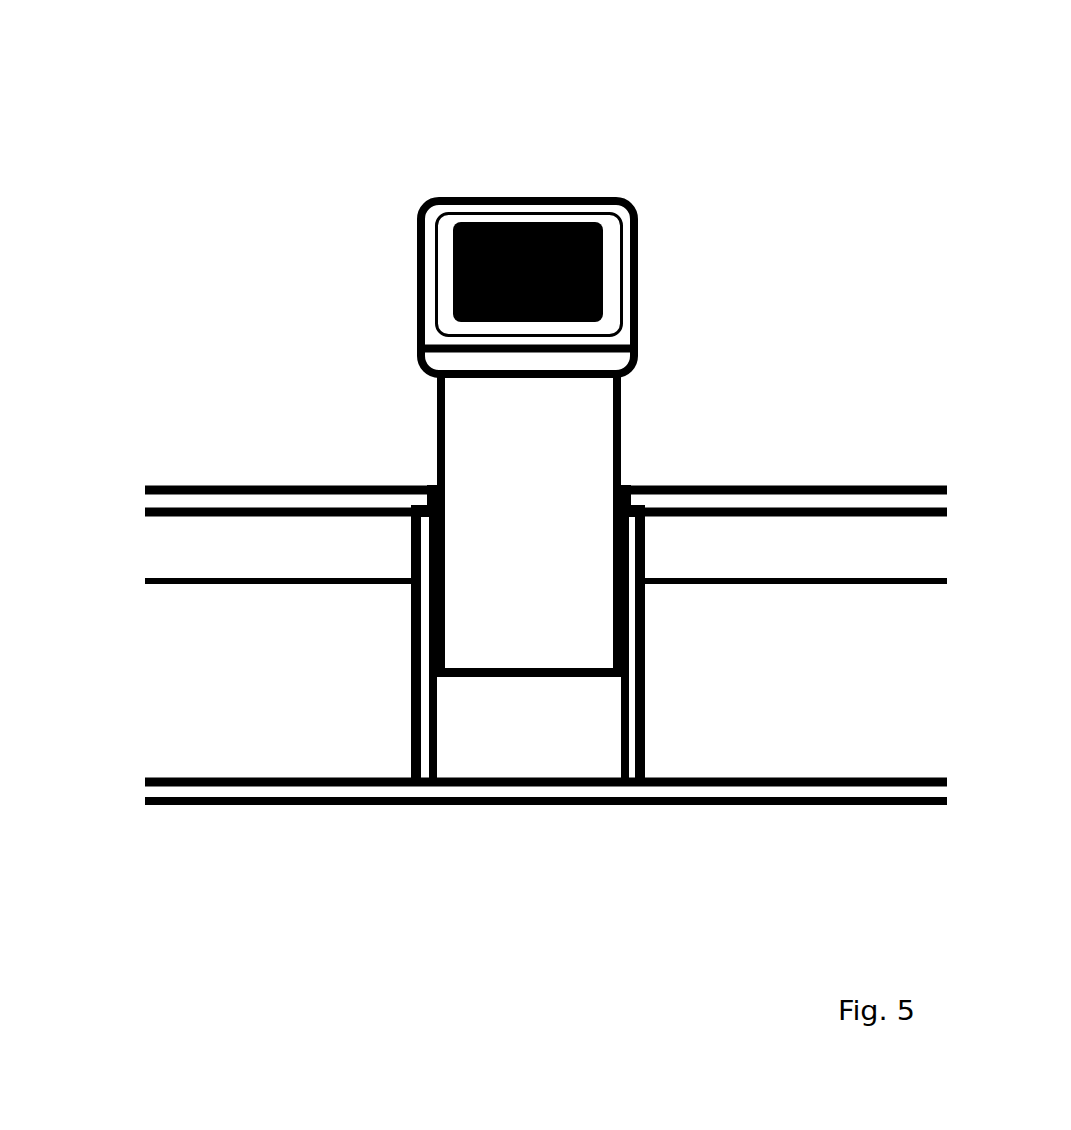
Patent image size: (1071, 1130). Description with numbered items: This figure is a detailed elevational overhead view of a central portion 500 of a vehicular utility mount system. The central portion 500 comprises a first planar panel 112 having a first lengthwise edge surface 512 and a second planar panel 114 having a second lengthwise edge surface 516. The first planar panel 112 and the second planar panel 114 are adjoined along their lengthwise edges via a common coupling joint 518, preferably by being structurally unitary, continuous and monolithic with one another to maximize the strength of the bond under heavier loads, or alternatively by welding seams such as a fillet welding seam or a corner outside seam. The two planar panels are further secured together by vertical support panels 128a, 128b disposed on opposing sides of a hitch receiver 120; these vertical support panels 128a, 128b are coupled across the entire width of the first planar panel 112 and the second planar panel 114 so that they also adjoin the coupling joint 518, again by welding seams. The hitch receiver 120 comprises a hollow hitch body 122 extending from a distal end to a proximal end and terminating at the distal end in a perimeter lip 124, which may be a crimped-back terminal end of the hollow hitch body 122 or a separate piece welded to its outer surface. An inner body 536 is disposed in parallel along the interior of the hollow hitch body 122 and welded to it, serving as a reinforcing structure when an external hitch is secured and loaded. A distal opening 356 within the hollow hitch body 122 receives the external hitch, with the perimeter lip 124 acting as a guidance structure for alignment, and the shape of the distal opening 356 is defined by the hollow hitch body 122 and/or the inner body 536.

The central portion 500 is at (262, 952).
The hitch receiver 120 is at (383, 174).
The hollow hitch body 122 is at (523, 562).
The perimeter lip 124 is at (632, 224).
The inner body 536 is at (577, 220).
The distal opening 356 is at (498, 262).
The vertical support panel 128a is at (425, 567).
The vertical support panel 128b is at (635, 698).
The second planar panel 114 is at (833, 557).
The second lengthwise edge surface 516 is at (770, 500).
The common coupling joint 518 is at (230, 582).
The first planar panel 112 is at (312, 710).
The first lengthwise edge surface 512 is at (396, 790).